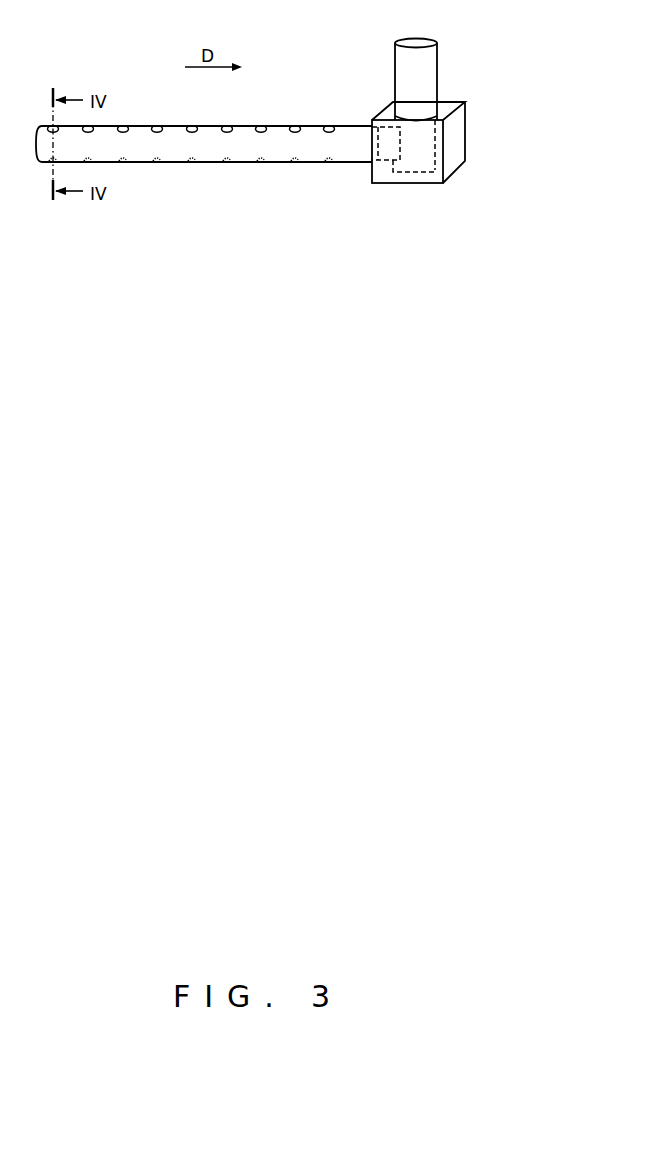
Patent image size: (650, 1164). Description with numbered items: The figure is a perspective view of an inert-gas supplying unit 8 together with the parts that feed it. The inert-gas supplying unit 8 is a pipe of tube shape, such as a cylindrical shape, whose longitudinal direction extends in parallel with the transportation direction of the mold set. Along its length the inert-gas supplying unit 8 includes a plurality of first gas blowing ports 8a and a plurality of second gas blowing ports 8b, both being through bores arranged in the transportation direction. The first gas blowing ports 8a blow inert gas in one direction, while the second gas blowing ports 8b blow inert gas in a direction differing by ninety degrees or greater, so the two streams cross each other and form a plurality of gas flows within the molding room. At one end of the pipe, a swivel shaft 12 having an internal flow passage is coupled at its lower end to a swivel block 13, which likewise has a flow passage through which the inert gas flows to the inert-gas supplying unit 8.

The inert-gas supplying unit 8 is at (279, 127).
The first gas blowing ports 8a is at (158, 128).
The second gas blowing ports 8b is at (157, 162).
The swivel shaft 12 is at (430, 68).
The swivel block 13 is at (458, 137).